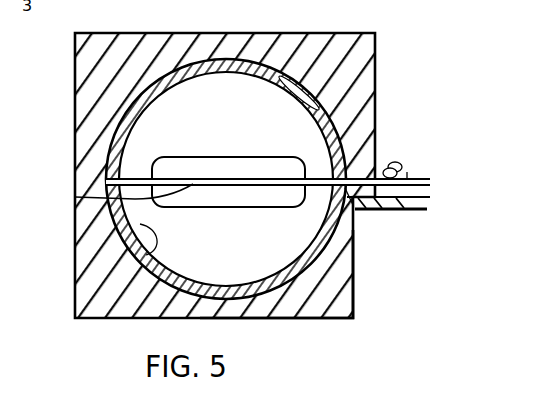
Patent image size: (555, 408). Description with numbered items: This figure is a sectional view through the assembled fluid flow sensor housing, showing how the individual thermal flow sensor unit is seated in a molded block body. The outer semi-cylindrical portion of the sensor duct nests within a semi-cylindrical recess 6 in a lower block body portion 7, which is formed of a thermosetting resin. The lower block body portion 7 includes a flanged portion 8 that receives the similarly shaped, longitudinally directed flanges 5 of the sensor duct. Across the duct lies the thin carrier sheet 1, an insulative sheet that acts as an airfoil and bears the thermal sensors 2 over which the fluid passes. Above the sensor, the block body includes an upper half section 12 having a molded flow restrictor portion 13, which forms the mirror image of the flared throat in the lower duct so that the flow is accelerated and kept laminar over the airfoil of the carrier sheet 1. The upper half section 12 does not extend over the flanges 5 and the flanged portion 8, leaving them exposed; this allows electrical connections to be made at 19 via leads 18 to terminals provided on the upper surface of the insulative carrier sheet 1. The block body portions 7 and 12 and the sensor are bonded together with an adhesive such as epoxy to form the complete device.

The carrier sheet 1 is at (100, 195).
The thermal sensors 2 is at (178, 174).
The flanges 5 is at (402, 211).
The semi-cylindrical recess 6 is at (148, 247).
The lower block body portion 7 is at (344, 280).
The flanged portion 8 is at (372, 211).
The upper half section of block body 12 is at (290, 45).
The molded flow restrictor portion 13 is at (205, 127).
The leads 18 is at (407, 172).
The electrical connections 19 is at (386, 176).